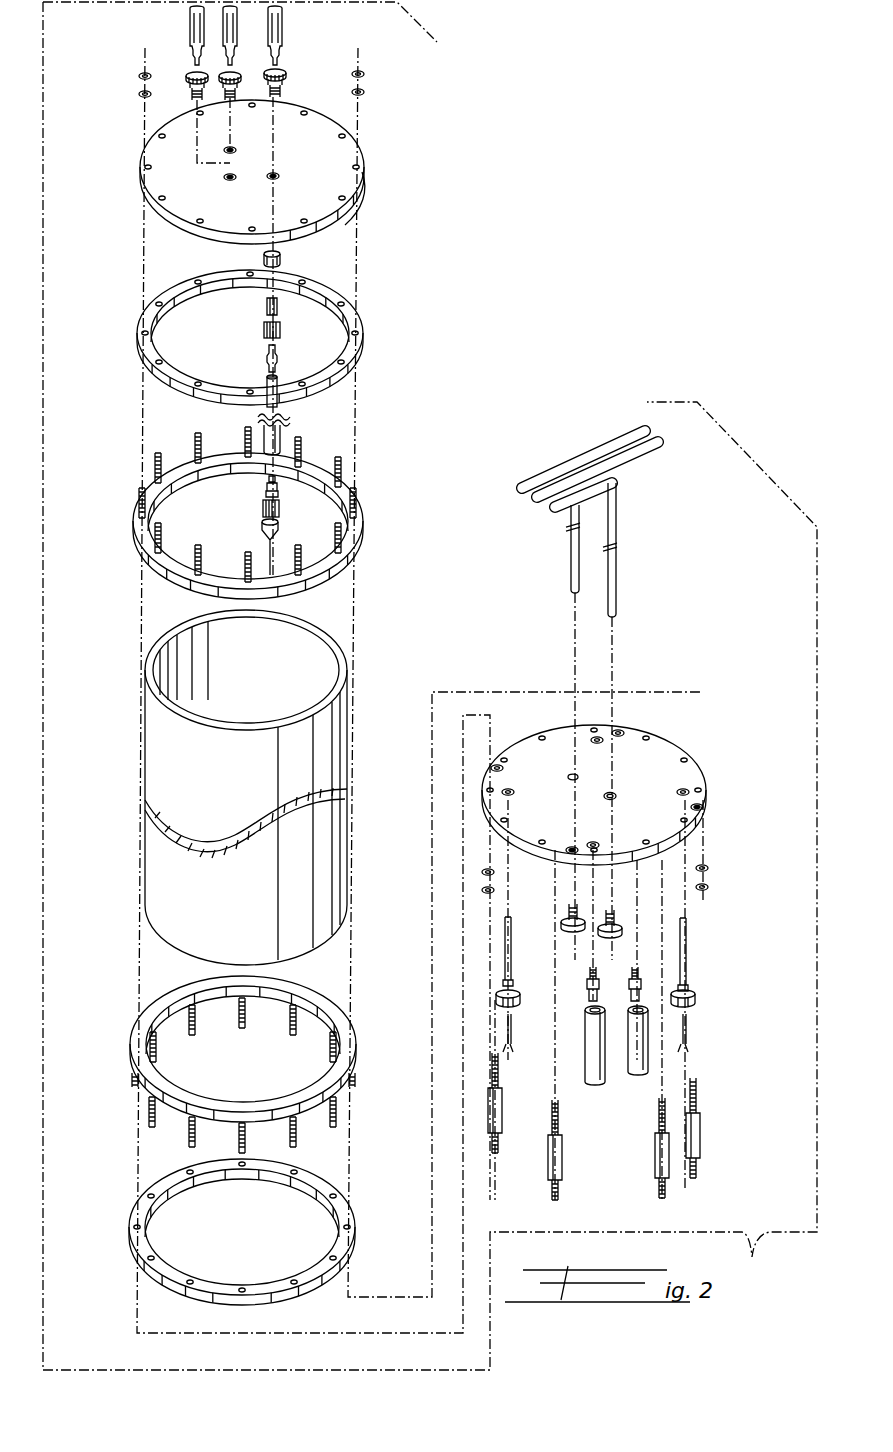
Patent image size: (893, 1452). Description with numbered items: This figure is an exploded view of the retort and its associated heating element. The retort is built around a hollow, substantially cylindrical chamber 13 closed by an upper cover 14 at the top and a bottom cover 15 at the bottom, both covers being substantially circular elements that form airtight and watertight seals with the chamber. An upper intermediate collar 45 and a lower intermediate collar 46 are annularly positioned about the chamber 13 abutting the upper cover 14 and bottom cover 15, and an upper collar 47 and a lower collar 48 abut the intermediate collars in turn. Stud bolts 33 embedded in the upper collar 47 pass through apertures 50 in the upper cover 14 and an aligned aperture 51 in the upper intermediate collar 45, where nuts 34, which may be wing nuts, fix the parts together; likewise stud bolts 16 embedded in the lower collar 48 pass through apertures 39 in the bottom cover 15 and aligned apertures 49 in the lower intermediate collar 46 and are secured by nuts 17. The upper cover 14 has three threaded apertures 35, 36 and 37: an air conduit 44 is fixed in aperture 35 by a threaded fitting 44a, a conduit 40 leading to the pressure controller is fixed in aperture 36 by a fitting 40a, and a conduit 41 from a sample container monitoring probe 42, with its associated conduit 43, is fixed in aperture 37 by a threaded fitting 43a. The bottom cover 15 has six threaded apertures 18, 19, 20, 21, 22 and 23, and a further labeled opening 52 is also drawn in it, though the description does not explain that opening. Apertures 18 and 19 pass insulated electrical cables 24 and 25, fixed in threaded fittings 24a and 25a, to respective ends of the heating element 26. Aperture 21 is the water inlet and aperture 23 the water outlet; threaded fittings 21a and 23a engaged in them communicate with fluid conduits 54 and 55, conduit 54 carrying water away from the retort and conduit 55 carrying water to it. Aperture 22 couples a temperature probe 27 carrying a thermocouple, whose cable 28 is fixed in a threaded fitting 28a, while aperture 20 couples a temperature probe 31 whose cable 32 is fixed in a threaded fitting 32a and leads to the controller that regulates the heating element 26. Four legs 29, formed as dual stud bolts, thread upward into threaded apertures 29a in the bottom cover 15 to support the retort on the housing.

The hollow cylindrical chamber 13 is at (347, 728).
The upper cover 14 is at (346, 148).
The bottom cover 15 is at (696, 772).
The stud bolts 16 is at (352, 1080).
The nuts 17 is at (484, 890).
The threaded aperture 18 is at (613, 794).
The threaded aperture 19 is at (572, 774).
The threaded aperture 20 is at (504, 792).
The water inlet aperture 21 is at (588, 845).
The threaded fitting 21a is at (587, 980).
The threaded aperture 22 is at (689, 792).
The water outlet aperture 23 is at (598, 736).
The threaded fitting 23a is at (642, 982).
The insulated electrical cable 24 is at (617, 572).
The threaded fitting 24a is at (569, 912).
The insulated electrical cable 25 is at (571, 570).
The threaded fitting 25a is at (622, 926).
The heating element 26 is at (593, 452).
The temperature probe 27 is at (688, 952).
The cable 28 is at (688, 1030).
The threaded fitting 28a is at (695, 1000).
The legs 29 is at (488, 1110).
The threaded apertures 29a is at (622, 731).
The temperature probe 31 is at (504, 950).
The cable 32 is at (506, 1030).
The threaded fitting 32a is at (496, 1000).
The stud bolts 33 is at (360, 500).
The nuts 34 is at (140, 78).
The threaded aperture 35 is at (226, 177).
The threaded aperture 36 is at (226, 150).
The threaded aperture 37 is at (279, 176).
The apertures 39 is at (703, 794).
The conduit 40 is at (227, 28).
The fitting 40a is at (225, 88).
The conduit 41 is at (283, 435).
The sample container monitoring probe 42 is at (280, 530).
The conduit 43 is at (283, 30).
The threaded fitting 43a is at (282, 90).
The air conduit 44 is at (193, 33).
The threaded fitting 44a is at (193, 78).
The upper intermediate collar 45 is at (365, 330).
The lower intermediate collar 46 is at (127, 1235).
The upper collar 47 is at (366, 540).
The lower collar 48 is at (130, 1045).
The apertures 49 is at (135, 1226).
The apertures 50 is at (352, 160).
The aperture 51 is at (347, 304).
The aperture 52 is at (650, 738).
The fluid conduit 54 is at (584, 1058).
The fluid conduit 55 is at (644, 1055).